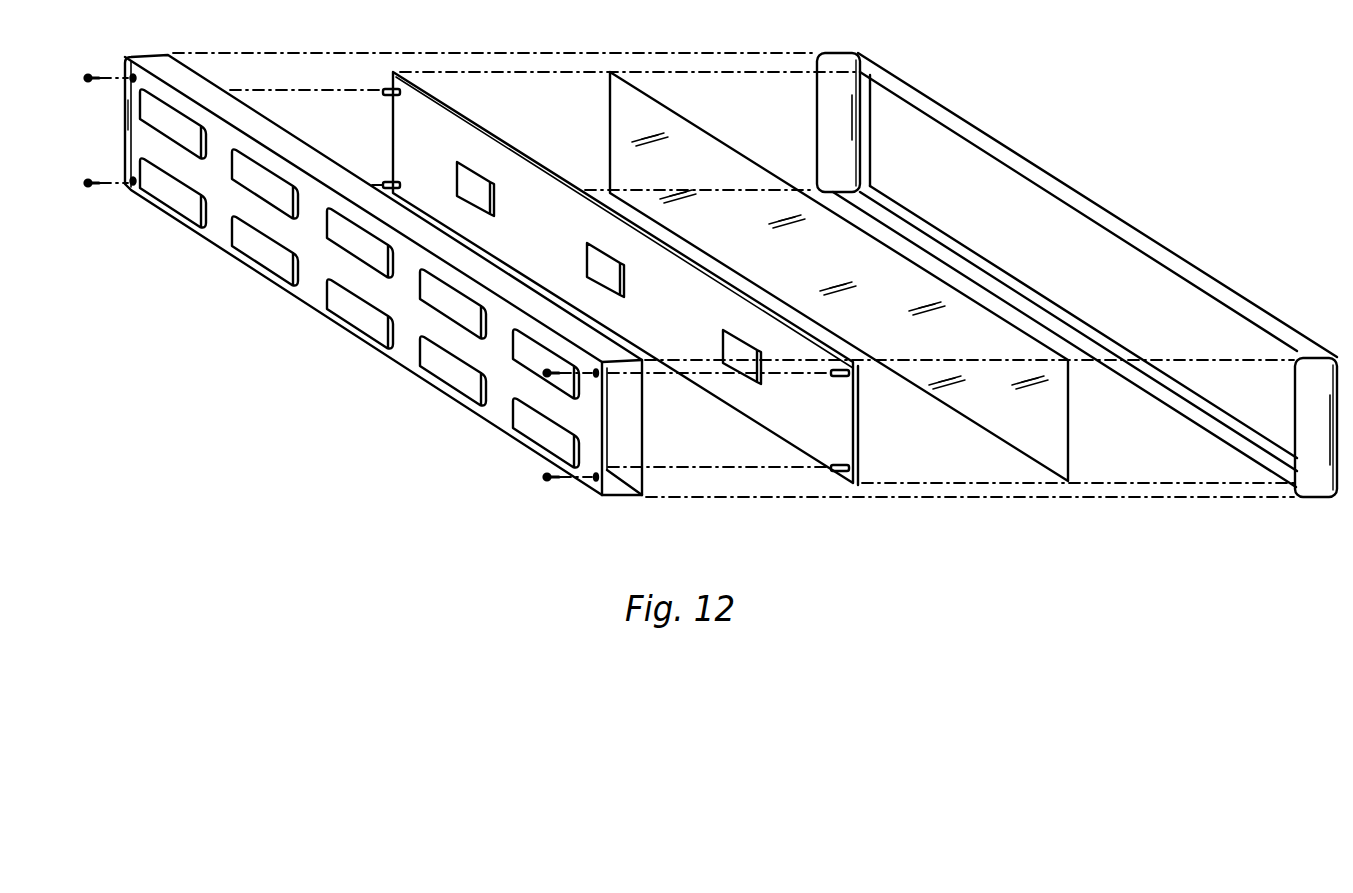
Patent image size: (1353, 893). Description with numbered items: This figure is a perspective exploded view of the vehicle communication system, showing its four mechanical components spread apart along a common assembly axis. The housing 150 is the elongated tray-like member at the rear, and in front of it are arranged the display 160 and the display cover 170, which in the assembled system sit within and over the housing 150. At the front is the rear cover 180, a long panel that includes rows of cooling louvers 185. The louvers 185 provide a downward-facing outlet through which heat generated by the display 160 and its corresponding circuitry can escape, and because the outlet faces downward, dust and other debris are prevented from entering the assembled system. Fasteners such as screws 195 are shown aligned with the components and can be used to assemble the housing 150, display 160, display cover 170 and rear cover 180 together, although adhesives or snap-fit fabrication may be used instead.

The housing 150 is at (1078, 162).
The display 160 is at (842, 452).
The display cover 170 is at (1053, 447).
The rear cover 180 is at (495, 403).
The cooling louvers 185 is at (362, 313).
The screws 195 is at (546, 479).